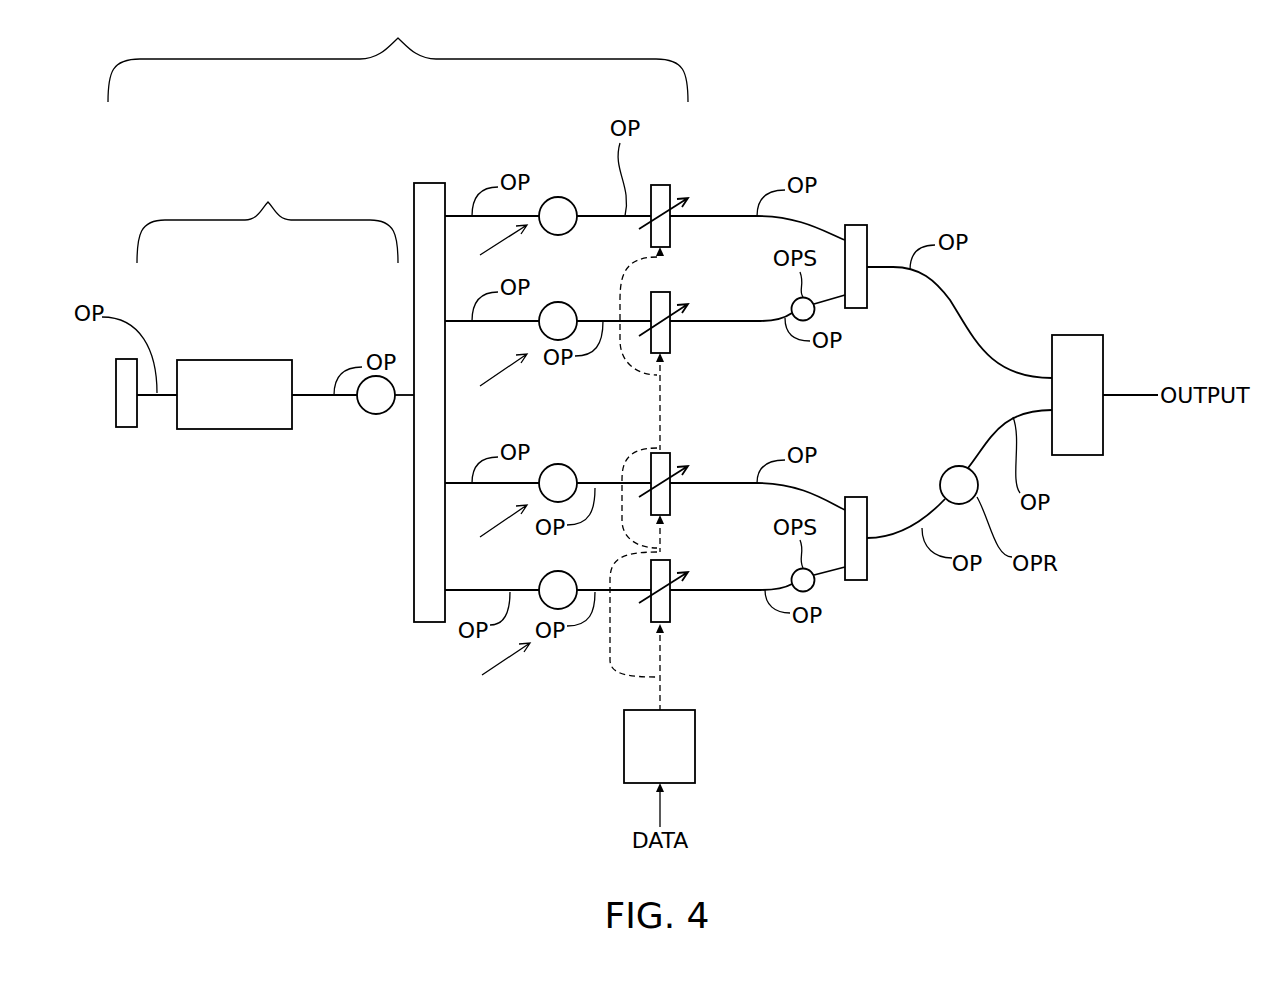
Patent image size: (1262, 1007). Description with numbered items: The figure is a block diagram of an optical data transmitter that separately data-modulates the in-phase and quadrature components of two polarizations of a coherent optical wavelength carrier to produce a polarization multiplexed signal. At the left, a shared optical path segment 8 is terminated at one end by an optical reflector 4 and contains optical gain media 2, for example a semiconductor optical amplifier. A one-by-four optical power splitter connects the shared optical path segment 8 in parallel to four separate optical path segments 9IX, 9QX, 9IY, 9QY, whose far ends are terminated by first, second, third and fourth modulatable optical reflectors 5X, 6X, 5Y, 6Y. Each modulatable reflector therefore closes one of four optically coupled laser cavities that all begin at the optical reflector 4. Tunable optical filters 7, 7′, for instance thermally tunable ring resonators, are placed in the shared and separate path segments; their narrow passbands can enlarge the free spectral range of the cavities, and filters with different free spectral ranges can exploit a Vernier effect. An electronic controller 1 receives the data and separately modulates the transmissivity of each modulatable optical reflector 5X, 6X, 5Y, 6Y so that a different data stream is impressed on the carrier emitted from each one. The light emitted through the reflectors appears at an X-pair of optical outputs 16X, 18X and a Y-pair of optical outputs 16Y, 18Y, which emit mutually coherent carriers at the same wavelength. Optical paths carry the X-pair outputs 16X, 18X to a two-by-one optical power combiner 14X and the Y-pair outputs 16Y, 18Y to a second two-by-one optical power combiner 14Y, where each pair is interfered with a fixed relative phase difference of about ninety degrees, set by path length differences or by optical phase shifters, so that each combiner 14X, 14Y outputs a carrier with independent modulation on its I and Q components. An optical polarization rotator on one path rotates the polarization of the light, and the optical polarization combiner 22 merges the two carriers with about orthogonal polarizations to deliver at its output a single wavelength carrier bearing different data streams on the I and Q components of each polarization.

The electronic controller 1 is at (653, 760).
The optical gain media 2 is at (225, 409).
The optical reflector 4 is at (127, 427).
The first modulatable optical reflector 5X is at (660, 185).
The second modulatable optical reflector 6X is at (660, 292).
The third modulatable optical reflector 5Y is at (660, 453).
The fourth modulatable optical reflector 6Y is at (660, 560).
The tunable optical filter 7 is at (377, 414).
The tunable optical filter 7′ is at (556, 302).
The shared optical path segment 8 is at (267, 217).
The separate optical path segment 9IX is at (495, 253).
The separate optical path segment 9QX is at (495, 382).
The separate optical path segment 9IY is at (495, 534).
The separate optical path segment 9QY is at (496, 677).
The 2×1 optical power combiner 14X is at (855, 225).
The 2×1 optical power combiner 14Y is at (855, 497).
The optical output 16X is at (672, 219).
The optical output 18X is at (672, 338).
The optical output 16Y is at (672, 488).
The optical output 18Y is at (672, 605).
The optical polarization combiner 22 is at (1077, 455).